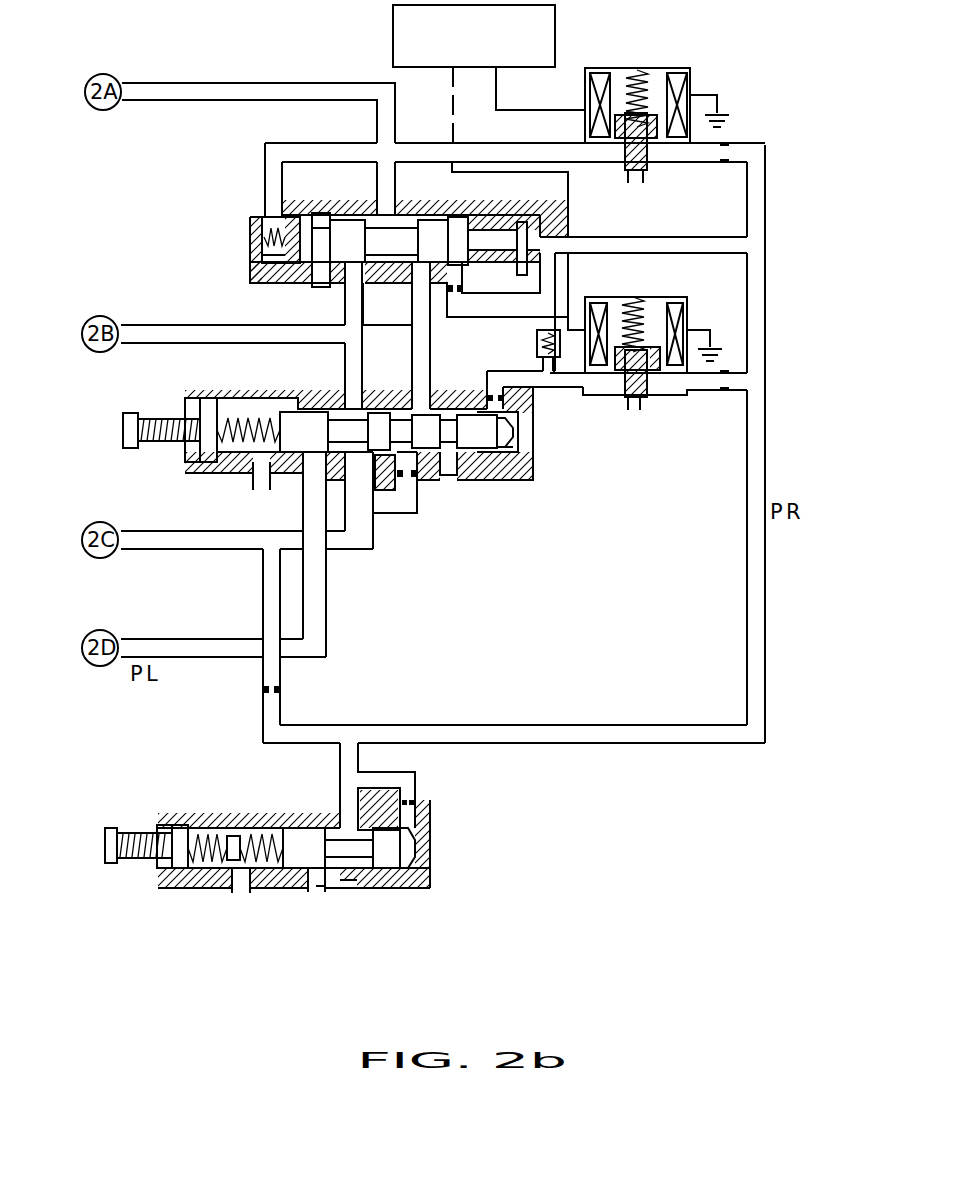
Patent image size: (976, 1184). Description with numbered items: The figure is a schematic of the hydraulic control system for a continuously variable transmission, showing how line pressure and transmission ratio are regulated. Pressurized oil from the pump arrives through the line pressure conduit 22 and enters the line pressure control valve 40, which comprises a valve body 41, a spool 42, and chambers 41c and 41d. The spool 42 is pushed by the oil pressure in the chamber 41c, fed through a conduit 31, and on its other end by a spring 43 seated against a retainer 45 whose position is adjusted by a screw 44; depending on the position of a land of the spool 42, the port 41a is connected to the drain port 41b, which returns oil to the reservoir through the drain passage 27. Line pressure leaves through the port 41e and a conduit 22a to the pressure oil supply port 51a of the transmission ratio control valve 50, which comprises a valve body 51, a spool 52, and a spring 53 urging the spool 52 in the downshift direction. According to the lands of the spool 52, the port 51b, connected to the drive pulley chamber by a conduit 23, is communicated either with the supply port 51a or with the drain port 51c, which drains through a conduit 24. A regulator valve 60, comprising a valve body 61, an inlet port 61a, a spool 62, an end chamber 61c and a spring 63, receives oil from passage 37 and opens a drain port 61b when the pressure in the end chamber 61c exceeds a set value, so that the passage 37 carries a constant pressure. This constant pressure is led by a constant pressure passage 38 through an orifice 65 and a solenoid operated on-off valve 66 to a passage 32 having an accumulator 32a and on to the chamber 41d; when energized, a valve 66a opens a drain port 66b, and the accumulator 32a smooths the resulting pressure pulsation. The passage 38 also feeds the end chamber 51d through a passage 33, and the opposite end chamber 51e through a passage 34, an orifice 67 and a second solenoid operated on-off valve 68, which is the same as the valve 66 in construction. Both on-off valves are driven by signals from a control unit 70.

The line pressure conduit 22 is at (170, 521).
The conduit 22a is at (344, 314).
The conduit 23 is at (216, 83).
The conduit 24 is at (232, 337).
The drain passage 27 is at (182, 651).
The conduit 31 is at (400, 508).
The passage 32 is at (570, 383).
The accumulator 32a is at (533, 358).
The passage 33 is at (660, 240).
The passage 34 is at (498, 147).
The passage 37 is at (306, 727).
The constant pressure passage 38 is at (766, 298).
The line pressure control valve 40 is at (495, 492).
The valve body 41 is at (470, 400).
The port 41a is at (377, 515).
The drain port 41b is at (313, 468).
The chamber 41c is at (410, 457).
The chamber 41d is at (510, 452).
The port 41e is at (351, 407).
The spool 42 is at (380, 427).
The spring 43 is at (244, 416).
The screw 44 is at (135, 450).
The retainer 45 is at (207, 456).
The transmission ratio control valve 50 is at (500, 201).
The valve body 51 is at (442, 206).
The pressure oil supply port 51a is at (332, 280).
The port 51b is at (387, 213).
The drain port 51c is at (388, 300).
The end chamber 51d is at (462, 282).
The end chamber 51e is at (262, 256).
The spool 52 is at (337, 233).
The spring 53 is at (262, 228).
The regulator valve 60 is at (447, 847).
The valve body 61 is at (207, 877).
The inlet port 61a is at (348, 823).
The drain port 61b is at (323, 888).
The end chamber 61c is at (417, 868).
The spool 62 is at (302, 862).
The spring 63 is at (231, 830).
The orifice 65 is at (725, 395).
The solenoid operated on-off valve 66 is at (680, 297).
The valve 66a is at (640, 384).
The drain port 66b is at (631, 411).
The orifice 67 is at (734, 142).
The solenoid operated on-off valve 68 is at (686, 68).
The control unit 70 is at (557, 38).